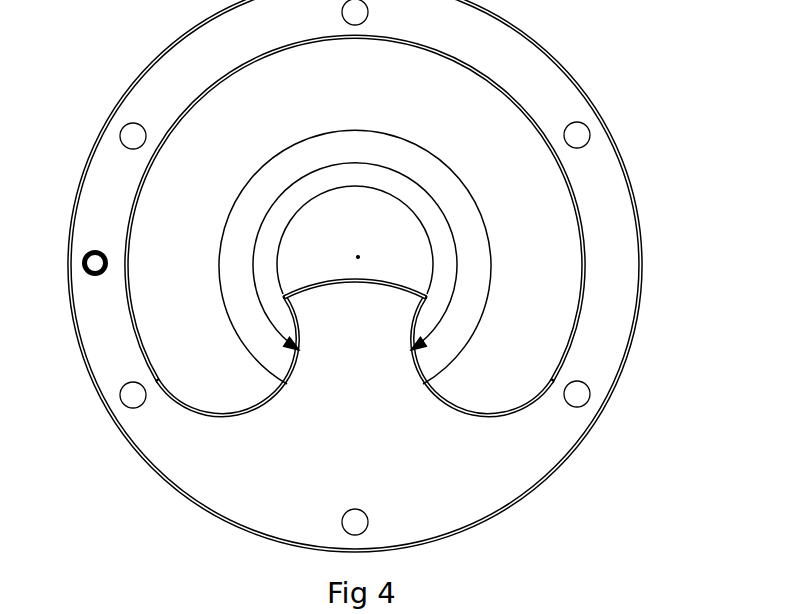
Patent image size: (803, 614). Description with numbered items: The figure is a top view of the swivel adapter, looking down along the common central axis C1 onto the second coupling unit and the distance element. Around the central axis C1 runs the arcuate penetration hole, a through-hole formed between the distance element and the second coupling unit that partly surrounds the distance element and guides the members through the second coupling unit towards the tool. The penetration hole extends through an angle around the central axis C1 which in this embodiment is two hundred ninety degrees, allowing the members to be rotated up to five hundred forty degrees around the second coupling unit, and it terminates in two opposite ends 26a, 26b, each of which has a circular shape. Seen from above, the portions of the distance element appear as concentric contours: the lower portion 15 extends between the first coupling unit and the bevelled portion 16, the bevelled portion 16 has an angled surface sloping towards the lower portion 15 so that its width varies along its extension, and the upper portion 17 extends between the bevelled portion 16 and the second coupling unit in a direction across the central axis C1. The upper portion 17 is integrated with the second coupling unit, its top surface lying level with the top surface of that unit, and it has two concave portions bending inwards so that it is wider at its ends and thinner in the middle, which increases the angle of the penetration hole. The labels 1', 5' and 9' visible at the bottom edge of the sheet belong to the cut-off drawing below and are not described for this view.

The lower portion 15 is at (485, 222).
The bevelled portion 16 is at (308, 240).
The upper portion 17 is at (352, 320).
The opposite end 26a is at (267, 397).
The opposite end 26b is at (427, 377).
The central axis C1 is at (357, 255).
The partially visible label (adjacent figure) 1' is at (124, 597).
The partially visible label (adjacent figure) 5' is at (243, 599).
The partially visible label (adjacent figure) 9' is at (576, 608).